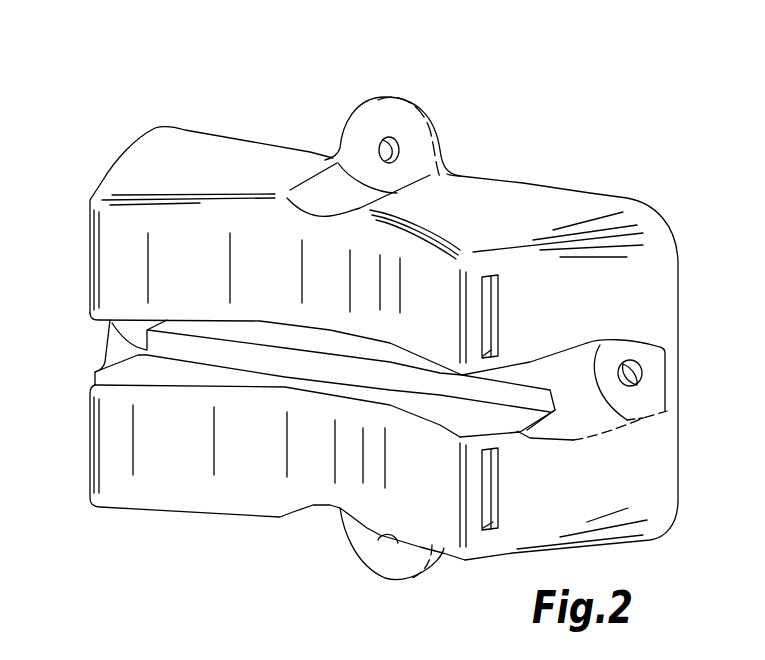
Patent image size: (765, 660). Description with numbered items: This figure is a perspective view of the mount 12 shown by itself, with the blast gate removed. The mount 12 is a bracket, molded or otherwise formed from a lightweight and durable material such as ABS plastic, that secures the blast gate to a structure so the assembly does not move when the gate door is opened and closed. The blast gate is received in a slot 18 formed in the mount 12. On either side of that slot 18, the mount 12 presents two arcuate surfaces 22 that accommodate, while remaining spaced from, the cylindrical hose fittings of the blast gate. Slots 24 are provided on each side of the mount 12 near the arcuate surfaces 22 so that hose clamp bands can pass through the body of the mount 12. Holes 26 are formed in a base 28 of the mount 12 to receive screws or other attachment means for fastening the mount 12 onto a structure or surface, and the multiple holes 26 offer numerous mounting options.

The mount 12 is at (548, 98).
The slot 18 is at (572, 355).
The arcuate surfaces 22 is at (118, 265).
The slots 24 is at (490, 277).
The holes 26 is at (392, 150).
The base 28 is at (677, 270).